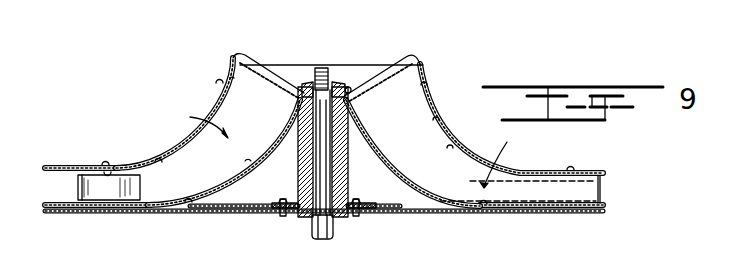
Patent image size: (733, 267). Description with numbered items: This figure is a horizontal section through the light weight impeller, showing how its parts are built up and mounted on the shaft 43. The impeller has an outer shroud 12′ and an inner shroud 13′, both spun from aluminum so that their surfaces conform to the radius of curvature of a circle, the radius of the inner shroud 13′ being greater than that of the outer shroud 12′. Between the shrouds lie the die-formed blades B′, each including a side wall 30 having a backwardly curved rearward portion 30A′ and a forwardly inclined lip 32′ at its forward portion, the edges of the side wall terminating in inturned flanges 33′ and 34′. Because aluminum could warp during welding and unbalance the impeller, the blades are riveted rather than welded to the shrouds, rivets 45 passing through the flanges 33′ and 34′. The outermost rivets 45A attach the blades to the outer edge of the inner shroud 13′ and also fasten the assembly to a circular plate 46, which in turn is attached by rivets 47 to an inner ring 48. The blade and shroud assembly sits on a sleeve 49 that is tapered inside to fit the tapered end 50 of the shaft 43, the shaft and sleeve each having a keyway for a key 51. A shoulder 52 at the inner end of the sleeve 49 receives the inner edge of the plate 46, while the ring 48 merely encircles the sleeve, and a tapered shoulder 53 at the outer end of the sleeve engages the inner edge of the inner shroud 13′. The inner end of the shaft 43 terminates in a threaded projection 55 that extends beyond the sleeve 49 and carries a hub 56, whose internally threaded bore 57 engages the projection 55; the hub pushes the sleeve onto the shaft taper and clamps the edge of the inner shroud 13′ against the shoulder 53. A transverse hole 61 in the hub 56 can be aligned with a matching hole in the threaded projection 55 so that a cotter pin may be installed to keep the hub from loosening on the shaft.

The outer shroud 12′ is at (218, 98).
The inner shroud 13′ is at (222, 193).
The side wall 30 is at (423, 158).
The rearward portion of side wall 30A′ is at (599, 189).
The forwardly inclined lip 32′ is at (242, 56).
The inturned flange 33′ is at (178, 152).
The inturned flange 34′ is at (208, 188).
The shaft 43 is at (310, 233).
The rivets 45 is at (285, 124).
The outermost rivets 45A is at (105, 216).
The circular plate 46 is at (190, 215).
The rivets 47 is at (285, 218).
The inner ring 48 is at (390, 217).
The sleeve 49 is at (302, 173).
The tapered end of shaft 50 is at (330, 157).
The key 51 is at (310, 153).
The shoulder 52 is at (337, 222).
The tapered shoulder 53 is at (351, 114).
The threaded projection 55 is at (318, 68).
The hub 56 is at (343, 83).
The bore 57 is at (677, 262).
The transverse hole 61 is at (308, 82).
The blades B′ is at (350, 146).